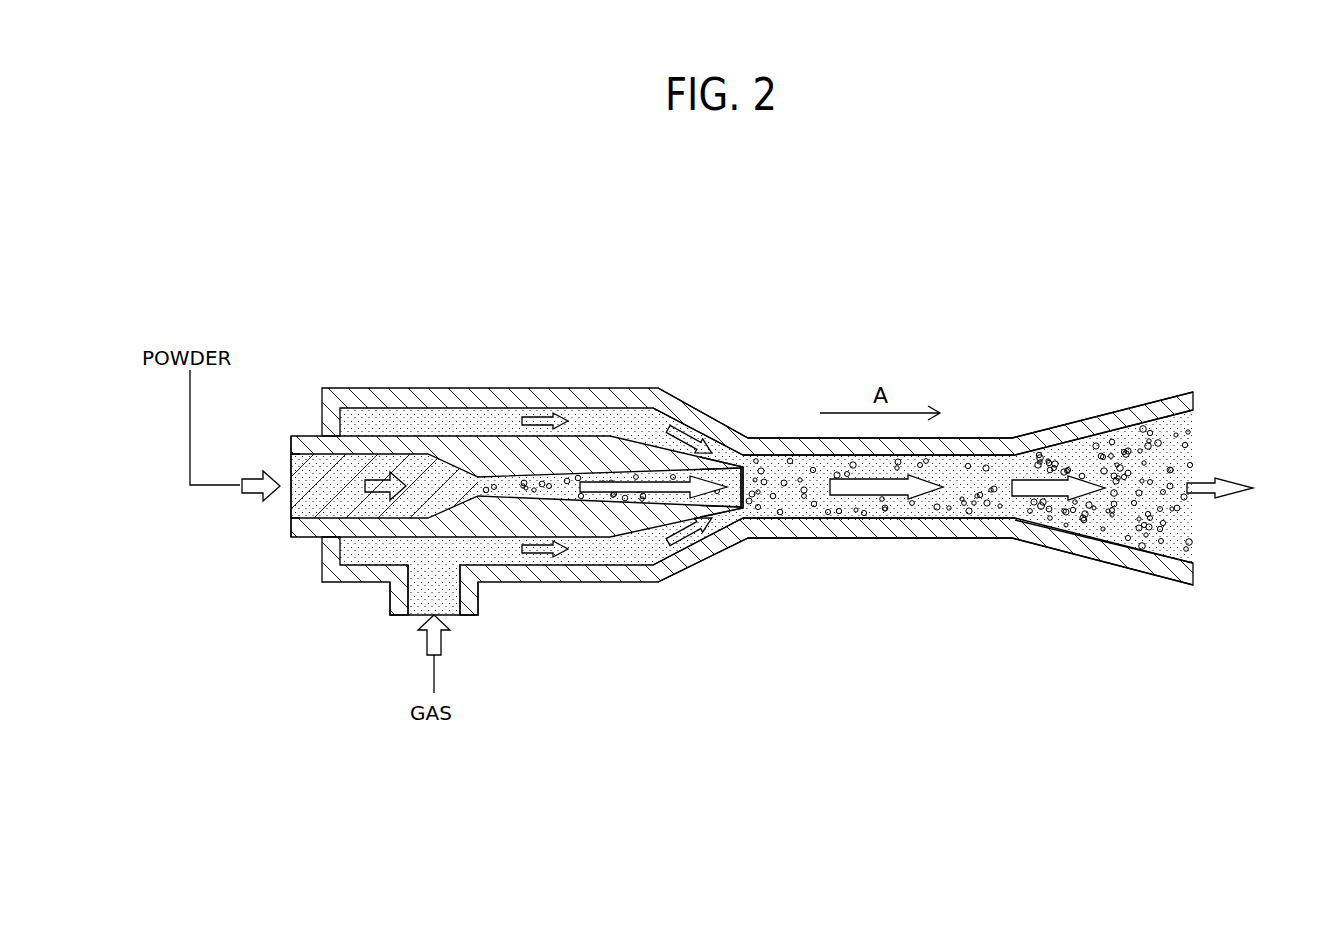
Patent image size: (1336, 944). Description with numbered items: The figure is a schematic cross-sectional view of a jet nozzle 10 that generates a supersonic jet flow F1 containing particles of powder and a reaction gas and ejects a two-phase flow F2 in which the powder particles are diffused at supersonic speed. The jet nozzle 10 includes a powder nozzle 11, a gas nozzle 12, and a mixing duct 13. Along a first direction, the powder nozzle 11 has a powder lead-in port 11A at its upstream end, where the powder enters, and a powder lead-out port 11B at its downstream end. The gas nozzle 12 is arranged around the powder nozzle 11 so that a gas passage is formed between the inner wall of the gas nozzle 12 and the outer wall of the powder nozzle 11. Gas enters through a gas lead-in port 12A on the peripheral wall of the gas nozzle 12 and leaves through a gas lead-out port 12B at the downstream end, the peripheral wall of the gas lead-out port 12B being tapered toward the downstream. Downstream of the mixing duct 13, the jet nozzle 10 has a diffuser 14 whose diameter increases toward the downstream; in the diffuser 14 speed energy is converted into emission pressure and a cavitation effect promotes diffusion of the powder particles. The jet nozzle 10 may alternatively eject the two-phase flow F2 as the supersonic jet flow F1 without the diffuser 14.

The jet nozzle 10 is at (855, 332).
The powder nozzle 11 is at (477, 443).
The powder lead-in port 11A is at (310, 539).
The powder lead-out port 11B is at (728, 458).
The gas nozzle 12 is at (555, 390).
The gas lead-in port 12A is at (390, 603).
The gas lead-out port 12B is at (703, 412).
The mixing duct 13 is at (853, 539).
The diffuser 14 is at (1098, 416).
The supersonic jet flow F1 is at (933, 491).
The two-phase flow F2 is at (1237, 478).